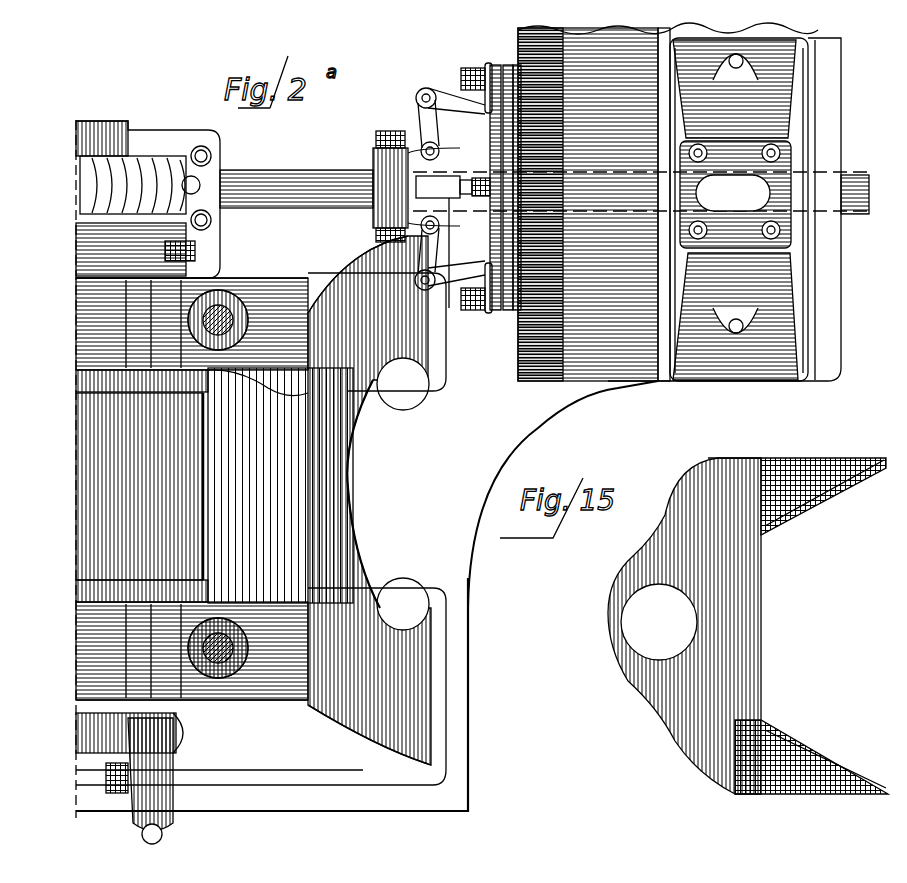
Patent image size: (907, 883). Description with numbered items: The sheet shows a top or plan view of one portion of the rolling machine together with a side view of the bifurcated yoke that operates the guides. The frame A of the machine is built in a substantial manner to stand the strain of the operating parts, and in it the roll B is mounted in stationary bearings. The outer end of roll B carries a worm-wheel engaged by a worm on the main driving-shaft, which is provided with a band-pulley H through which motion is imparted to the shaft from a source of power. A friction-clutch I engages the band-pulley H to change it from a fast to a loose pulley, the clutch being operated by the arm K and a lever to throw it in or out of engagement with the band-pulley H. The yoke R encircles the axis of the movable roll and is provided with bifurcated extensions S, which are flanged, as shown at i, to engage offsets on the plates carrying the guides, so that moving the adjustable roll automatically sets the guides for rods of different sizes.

In FIG. 2A, the arm K is at (370, 224).
In FIG. 2A, the friction-clutch I is at (461, 262).
In FIG. 2A, the band-pulley H is at (668, 202).
In FIG. 2A, the frame A is at (245, 320).
In FIG. 2A, the roll B is at (139, 486).
In FIG. 15, the yoke R is at (684, 626).
In FIG. 15, the bifurcated extension S is at (798, 450).
In FIG. 15, the flange i is at (846, 478).